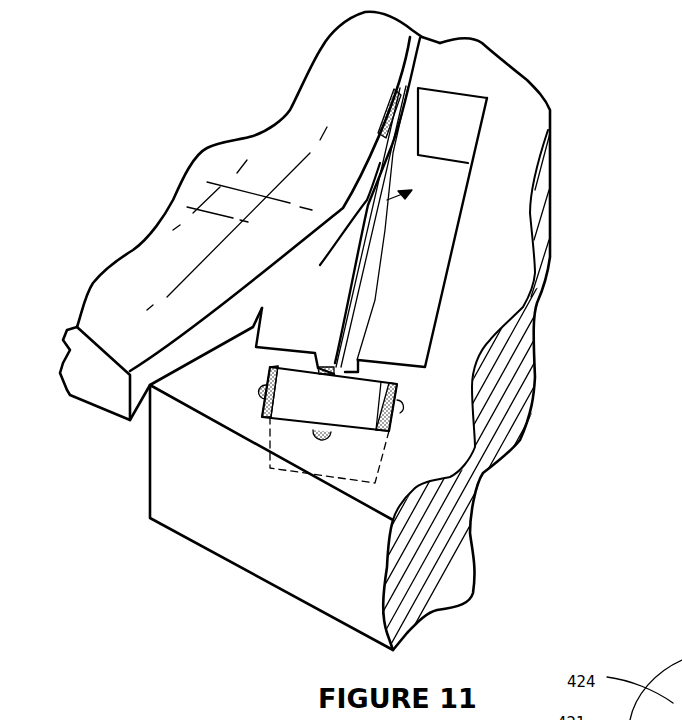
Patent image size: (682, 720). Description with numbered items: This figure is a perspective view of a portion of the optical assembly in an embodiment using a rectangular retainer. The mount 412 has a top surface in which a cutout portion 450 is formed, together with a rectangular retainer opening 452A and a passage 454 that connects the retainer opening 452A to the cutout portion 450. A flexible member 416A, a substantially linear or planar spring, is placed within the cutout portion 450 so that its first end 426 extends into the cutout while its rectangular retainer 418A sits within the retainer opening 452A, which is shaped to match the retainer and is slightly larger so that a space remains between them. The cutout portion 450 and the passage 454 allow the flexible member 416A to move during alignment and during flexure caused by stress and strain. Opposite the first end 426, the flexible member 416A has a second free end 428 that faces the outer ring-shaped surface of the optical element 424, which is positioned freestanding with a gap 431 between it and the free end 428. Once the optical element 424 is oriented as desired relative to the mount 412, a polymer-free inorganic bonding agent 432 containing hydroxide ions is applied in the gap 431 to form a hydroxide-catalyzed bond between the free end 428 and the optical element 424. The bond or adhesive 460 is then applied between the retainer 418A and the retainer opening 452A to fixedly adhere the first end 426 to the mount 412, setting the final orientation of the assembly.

The mount 412 is at (530, 107).
The flexible member 416A is at (412, 192).
The retainer 418A is at (378, 408).
The optical element 424 is at (347, 57).
The first end 426 is at (362, 360).
The second free end 428 is at (412, 83).
The gap 431 is at (372, 155).
The polymer-free inorganic bonding agent 432 is at (380, 150).
The cutout portion 450 is at (430, 238).
The retainer opening 452A is at (310, 416).
The passage 454 is at (323, 365).
The bond or adhesive 460 is at (253, 390).